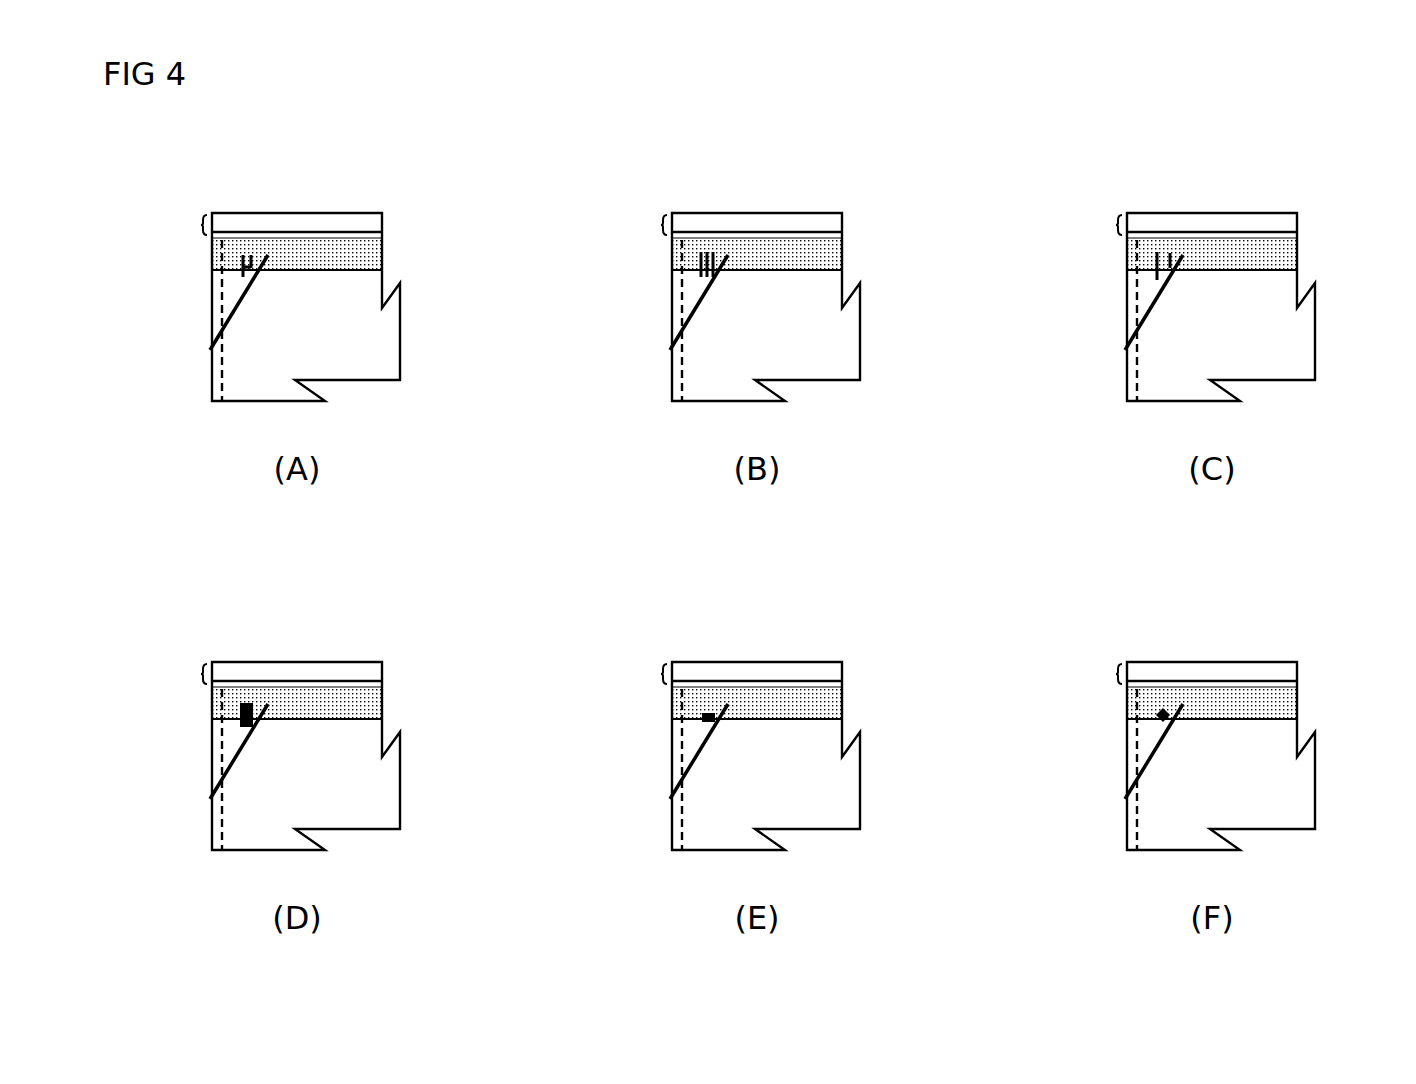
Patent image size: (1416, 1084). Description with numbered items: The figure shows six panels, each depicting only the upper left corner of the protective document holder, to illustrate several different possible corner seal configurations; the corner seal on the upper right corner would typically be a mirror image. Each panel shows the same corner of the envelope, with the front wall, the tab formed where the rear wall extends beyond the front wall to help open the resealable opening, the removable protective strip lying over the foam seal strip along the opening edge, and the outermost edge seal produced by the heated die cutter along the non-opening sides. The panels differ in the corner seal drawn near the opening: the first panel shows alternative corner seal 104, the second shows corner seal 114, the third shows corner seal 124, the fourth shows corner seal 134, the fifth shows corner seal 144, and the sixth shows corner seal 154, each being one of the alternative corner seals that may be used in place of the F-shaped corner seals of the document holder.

The corner seal 104 is at (247, 290).
The corner seal 114 is at (646, 301).
The corner seal 124 is at (1101, 301).
The corner seal 134 is at (186, 751).
The corner seal 144 is at (646, 751).
The corner seal 154 is at (1101, 751).